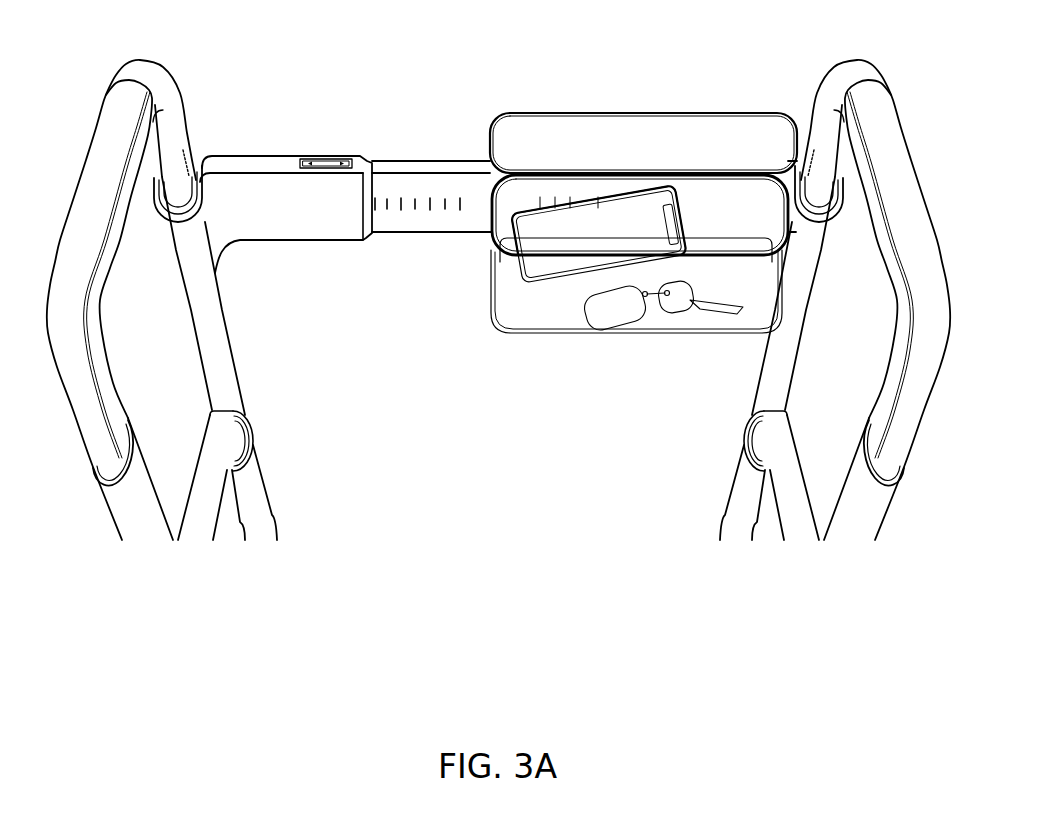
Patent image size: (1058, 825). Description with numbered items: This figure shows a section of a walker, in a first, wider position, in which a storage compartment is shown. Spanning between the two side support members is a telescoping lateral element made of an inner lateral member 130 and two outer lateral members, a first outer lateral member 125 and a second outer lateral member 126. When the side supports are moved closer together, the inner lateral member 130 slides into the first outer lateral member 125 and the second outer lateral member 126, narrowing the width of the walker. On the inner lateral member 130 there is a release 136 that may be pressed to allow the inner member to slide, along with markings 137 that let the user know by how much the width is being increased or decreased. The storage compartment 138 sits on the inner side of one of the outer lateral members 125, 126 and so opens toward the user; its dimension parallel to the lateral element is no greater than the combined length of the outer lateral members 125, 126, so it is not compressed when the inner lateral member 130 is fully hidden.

The first outer lateral member 125 is at (803, 150).
The second outer lateral member 126 is at (278, 245).
The inner lateral member 130 is at (443, 165).
The release 136 is at (323, 158).
The markings 137 is at (421, 208).
The storage compartment 138 is at (519, 347).